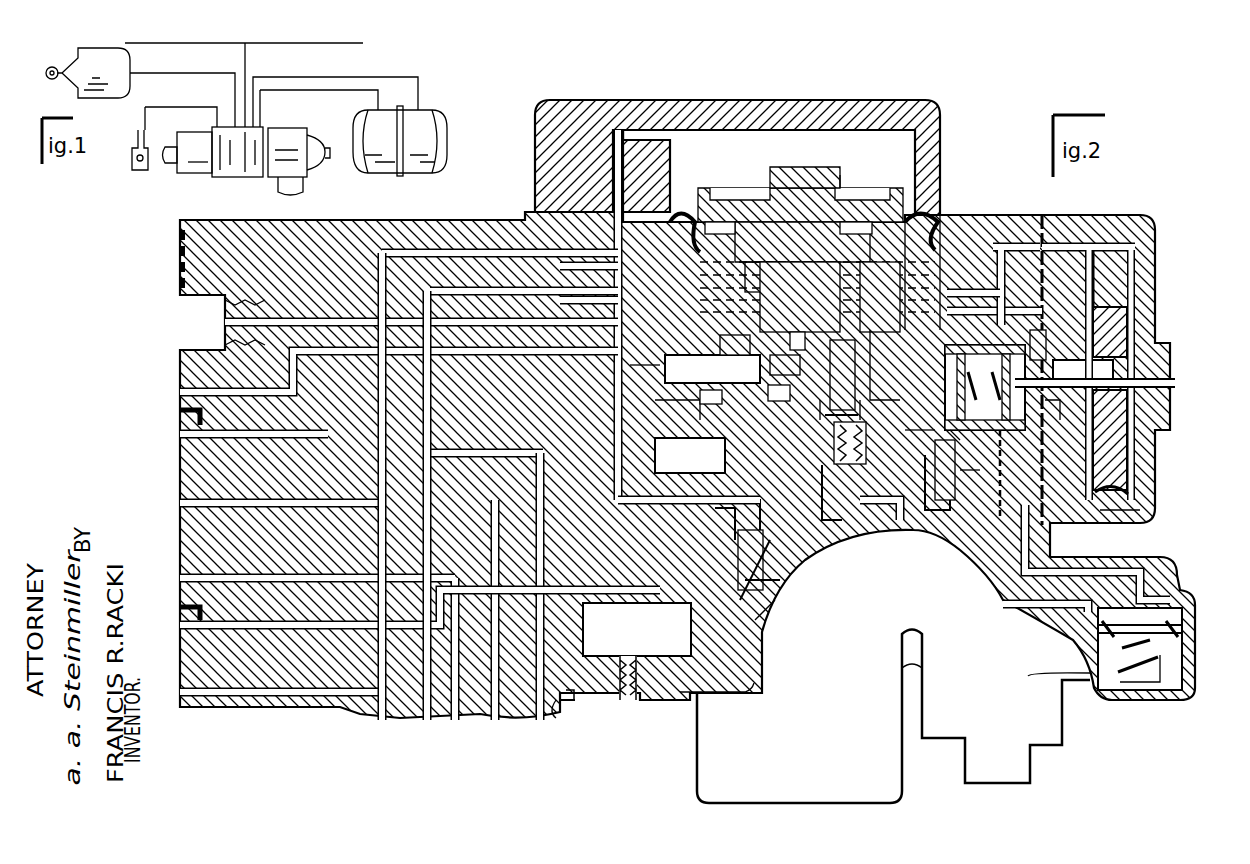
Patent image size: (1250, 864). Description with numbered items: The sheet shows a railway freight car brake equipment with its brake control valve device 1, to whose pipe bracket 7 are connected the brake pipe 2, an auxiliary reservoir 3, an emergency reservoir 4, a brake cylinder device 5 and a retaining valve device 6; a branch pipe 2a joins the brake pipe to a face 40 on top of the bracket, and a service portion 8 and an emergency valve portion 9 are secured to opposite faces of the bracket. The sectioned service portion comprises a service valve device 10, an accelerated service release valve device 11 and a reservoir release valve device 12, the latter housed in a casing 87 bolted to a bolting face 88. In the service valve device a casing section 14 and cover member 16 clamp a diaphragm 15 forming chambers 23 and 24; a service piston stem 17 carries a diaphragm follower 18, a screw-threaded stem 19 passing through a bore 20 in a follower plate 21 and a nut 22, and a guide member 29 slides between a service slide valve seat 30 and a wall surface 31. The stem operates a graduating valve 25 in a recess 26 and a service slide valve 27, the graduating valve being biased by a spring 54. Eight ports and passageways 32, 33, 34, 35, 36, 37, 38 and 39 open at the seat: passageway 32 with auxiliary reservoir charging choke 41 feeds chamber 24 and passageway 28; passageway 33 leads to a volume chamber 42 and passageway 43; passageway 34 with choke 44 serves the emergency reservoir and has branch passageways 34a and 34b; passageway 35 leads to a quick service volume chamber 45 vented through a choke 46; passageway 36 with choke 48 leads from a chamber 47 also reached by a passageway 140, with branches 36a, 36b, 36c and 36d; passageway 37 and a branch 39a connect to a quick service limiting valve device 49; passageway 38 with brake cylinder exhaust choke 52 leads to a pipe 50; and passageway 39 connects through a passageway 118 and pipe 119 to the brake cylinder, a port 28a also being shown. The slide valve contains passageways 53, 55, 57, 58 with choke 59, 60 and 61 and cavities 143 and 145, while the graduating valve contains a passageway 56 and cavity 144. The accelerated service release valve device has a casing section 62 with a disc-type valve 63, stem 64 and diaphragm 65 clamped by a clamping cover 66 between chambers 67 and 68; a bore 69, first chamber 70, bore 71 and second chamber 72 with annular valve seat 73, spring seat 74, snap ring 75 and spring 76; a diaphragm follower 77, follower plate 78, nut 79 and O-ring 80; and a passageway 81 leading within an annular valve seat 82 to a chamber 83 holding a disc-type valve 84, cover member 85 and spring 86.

In FIG. 1, the brake control valve device 1 is at (234, 178).
In FIG. 1, the brake pipe 2 is at (256, 40).
In FIG. 1, the branch pipe 2a is at (244, 58).
In FIG. 1, the auxiliary reservoir 3 is at (388, 173).
In FIG. 1, the emergency reservoir 4 is at (402, 176).
In FIG. 1, the brake cylinder device 5 is at (116, 62).
In FIG. 1, the retaining valve device 6 is at (138, 166).
In FIG. 1, the pipe bracket 7 is at (268, 177).
In FIG. 1, the service portion 8 is at (292, 140).
In FIG. 2, the service portion 8 is at (193, 220).
In FIG. 1, the emergency valve portion 9 is at (190, 140).
In FIG. 2, the service valve device 10 is at (590, 98).
In FIG. 2, the accelerated service release valve device 11 is at (1048, 212).
In FIG. 2, the reservoir release valve device 12 is at (574, 702).
In FIG. 2, the casing section 14 is at (490, 220).
In FIG. 2, the diaphragm 15 is at (930, 228).
In FIG. 2, the cover member 16 is at (722, 98).
In FIG. 2, the service piston stem 17 is at (766, 245).
In FIG. 2, the diaphragm follower 18 is at (728, 228).
In FIG. 2, the screw-threaded stem 19 is at (790, 178).
In FIG. 2, the bore 20 is at (822, 215).
In FIG. 2, the diaphragm follower plate 21 is at (742, 188).
In FIG. 2, the nut 22 is at (838, 185).
In FIG. 2, the chamber 23 is at (782, 135).
In FIG. 2, the chamber 24 is at (930, 255).
In FIG. 2, the graduating valve 25 is at (830, 366).
In FIG. 2, the recess 26 is at (832, 370).
In FIG. 2, the service slide valve 27 is at (760, 612).
In FIG. 1, the passageway 28 is at (366, 90).
In FIG. 2, the passageway 28 is at (552, 250).
In FIG. 2, the port 28a is at (378, 724).
In FIG. 2, the guide member 29 is at (874, 345).
In FIG. 2, the service slide valve seat 30 is at (728, 636).
In FIG. 2, the wall surface 31 is at (848, 340).
In FIG. 2, the port and passageway 32 is at (262, 436).
In FIG. 2, the port and passageway 33 is at (720, 386).
In FIG. 1, the port and passageway 34 is at (350, 76).
In FIG. 2, the port and passageway 34 is at (256, 492).
In FIG. 2, the first branch passageway 34a is at (425, 722).
In FIG. 2, the second branch passageway 34b is at (455, 294).
In FIG. 2, the port and passageway 35 is at (712, 458).
In FIG. 2, the port and passageway 36 is at (350, 322).
In FIG. 2, the first branch passageway 36a is at (664, 132).
In FIG. 2, the second branch passageway 36b is at (1015, 243).
In FIG. 2, the third branch passageway 36c is at (985, 602).
In FIG. 2, the passage 36d is at (615, 303).
In FIG. 2, the port and passageway 37 is at (722, 522).
In FIG. 2, the port and passageway 38 is at (258, 626).
In FIG. 2, the port and passageway 39 is at (720, 590).
In FIG. 2, the branch passageway 39a is at (500, 490).
In FIG. 1, the face 40 is at (262, 120).
In FIG. 2, the auxiliary reservoir charging choke 41 is at (198, 418).
In FIG. 2, the volume chamber 42 is at (652, 360).
In FIG. 2, the passageway 43 is at (1038, 300).
In FIG. 2, the emergency reservoir charging choke 44 is at (700, 420).
In FIG. 2, the quick service volume chamber 45 is at (690, 640).
In FIG. 2, the choke 46 is at (628, 700).
In FIG. 2, the chamber 47 is at (190, 275).
In FIG. 2, the choke 48 is at (252, 305).
In FIG. 2, the quick service limiting valve device 49 is at (1025, 770).
In FIG. 1, the pipe 50 is at (194, 107).
In FIG. 2, the brake cylinder exhaust choke 52 is at (202, 608).
In FIG. 2, the first passageway 53 is at (765, 516).
In FIG. 2, the spring 54 is at (835, 440).
In FIG. 2, the second passageway 55 is at (810, 325).
In FIG. 2, the passageway 56 is at (832, 395).
In FIG. 2, the third passageway 57 is at (864, 410).
In FIG. 2, the fourth passageway 58 is at (780, 370).
In FIG. 2, the choke 59 is at (782, 395).
In FIG. 2, the fifth passageway 60 is at (828, 480).
In FIG. 2, the sixth passageway 61 is at (775, 600).
In FIG. 2, the casing section 62 is at (1092, 215).
In FIG. 2, the disc-type valve 63 is at (950, 462).
In FIG. 2, the valve operating stem 64 is at (1175, 384).
In FIG. 2, the diaphragm 65 is at (1118, 515).
In FIG. 2, the clamping cover 66 is at (1160, 432).
In FIG. 2, the chamber 67 is at (1130, 485).
In FIG. 2, the chamber 68 is at (1105, 540).
In FIG. 2, the bore 69 is at (1045, 368).
In FIG. 2, the first chamber 70 is at (1040, 345).
In FIG. 2, the bore 71 is at (1000, 445).
In FIG. 2, the second chamber 72 is at (914, 420).
In FIG. 2, the annular valve seat 73 is at (990, 470).
In FIG. 2, the spring seat 74 is at (950, 378).
In FIG. 2, the snap ring 75 is at (948, 435).
In FIG. 2, the spring 76 is at (958, 395).
In FIG. 2, the diaphragm follower 77 is at (1125, 296).
In FIG. 2, the diaphragm follower plate 78 is at (1133, 312).
In FIG. 2, the nut 79 is at (1162, 358).
In FIG. 2, the O-ring 80 is at (1065, 400).
In FIG. 2, the passageway 81 is at (1030, 543).
In FIG. 2, the annular valve seat 82 is at (1180, 595).
In FIG. 2, the chamber 83 is at (1182, 660).
In FIG. 2, the disc-type valve 84 is at (1184, 632).
In FIG. 2, the cover member 85 is at (1187, 686).
In FIG. 2, the spring 86 is at (1130, 660).
In FIG. 2, the casing 87 is at (560, 712).
In FIG. 2, the bolting face 88 is at (565, 712).
In FIG. 2, the second passageway 118 is at (202, 580).
In FIG. 1, the pipe 119 is at (172, 70).
In FIG. 2, the fourth passageway 140 is at (266, 386).
In FIG. 2, the cavity 143 is at (790, 578).
In FIG. 2, the cavity 144 is at (770, 525).
In FIG. 2, the cavity 145 is at (736, 535).